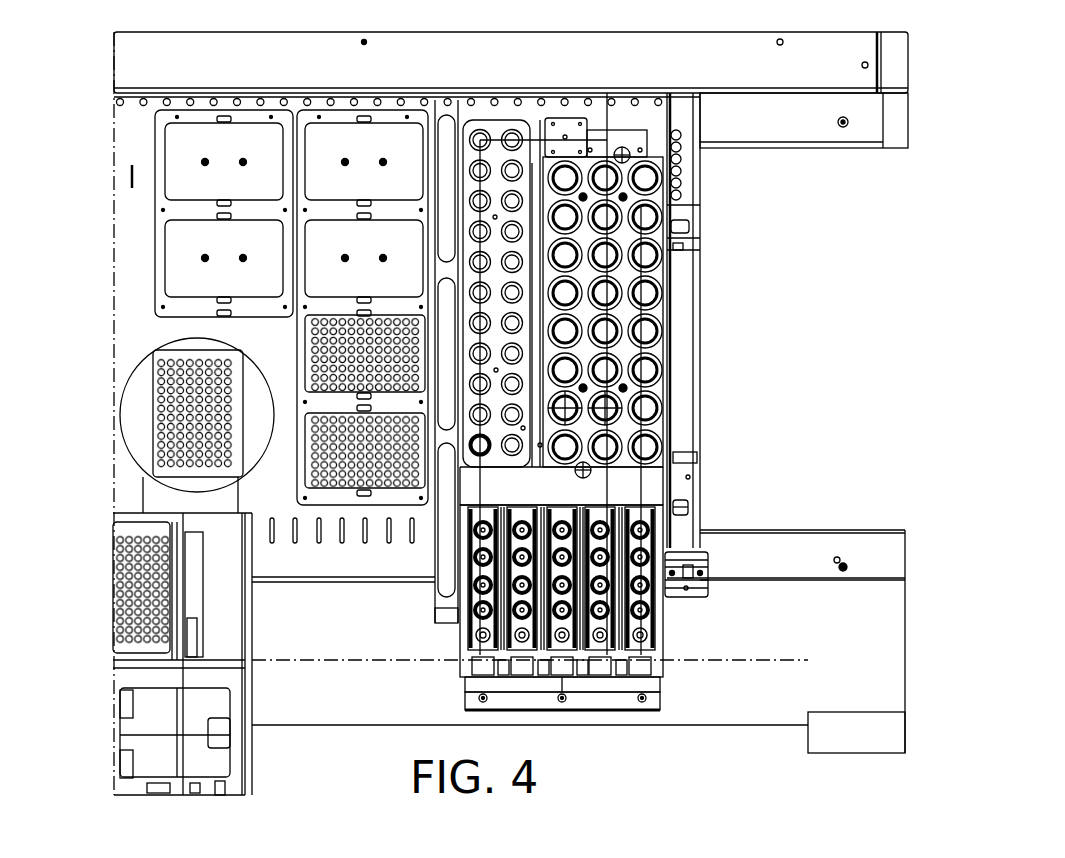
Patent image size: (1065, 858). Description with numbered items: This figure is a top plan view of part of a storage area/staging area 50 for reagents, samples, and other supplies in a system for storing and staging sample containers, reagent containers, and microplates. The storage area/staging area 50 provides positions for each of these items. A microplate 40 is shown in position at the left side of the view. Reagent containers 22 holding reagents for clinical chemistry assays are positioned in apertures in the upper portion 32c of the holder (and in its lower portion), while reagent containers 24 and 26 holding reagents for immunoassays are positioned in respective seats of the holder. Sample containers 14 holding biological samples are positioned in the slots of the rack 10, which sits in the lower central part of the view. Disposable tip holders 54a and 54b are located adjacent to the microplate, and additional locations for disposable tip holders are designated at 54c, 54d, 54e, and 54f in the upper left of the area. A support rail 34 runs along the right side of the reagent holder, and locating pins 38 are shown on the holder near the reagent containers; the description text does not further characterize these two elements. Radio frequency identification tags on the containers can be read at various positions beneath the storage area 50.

The rack 10 is at (599, 607).
The sample containers 14 is at (663, 603).
The reagent containers 22 is at (490, 200).
The reagent containers 24 is at (641, 312).
The reagent containers 26 is at (610, 372).
The upper portion of the holder 32c is at (523, 428).
The support rail 34 is at (660, 388).
The locating pin 38 is at (583, 203).
The microplate 40 is at (165, 420).
The storage area/staging area 50 is at (767, 248).
The disposable tip holder 54a is at (312, 468).
The disposable tip holder 54b is at (312, 343).
The location for disposable tip holder 54c is at (180, 150).
The location for disposable tip holder 54d is at (180, 252).
The location for disposable tip holder 54e is at (375, 150).
The location for disposable tip holder 54f is at (330, 233).